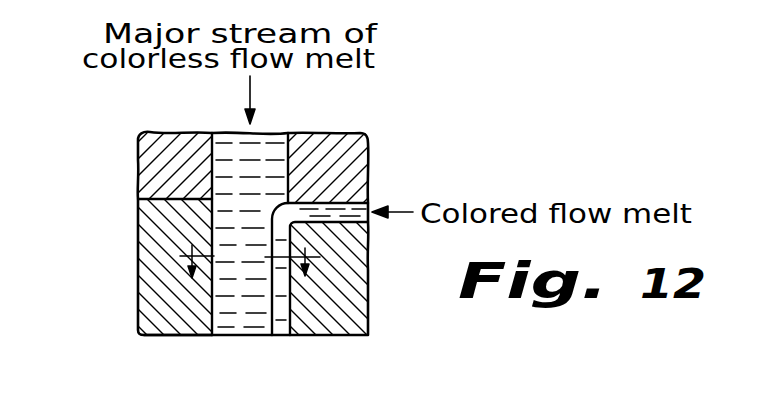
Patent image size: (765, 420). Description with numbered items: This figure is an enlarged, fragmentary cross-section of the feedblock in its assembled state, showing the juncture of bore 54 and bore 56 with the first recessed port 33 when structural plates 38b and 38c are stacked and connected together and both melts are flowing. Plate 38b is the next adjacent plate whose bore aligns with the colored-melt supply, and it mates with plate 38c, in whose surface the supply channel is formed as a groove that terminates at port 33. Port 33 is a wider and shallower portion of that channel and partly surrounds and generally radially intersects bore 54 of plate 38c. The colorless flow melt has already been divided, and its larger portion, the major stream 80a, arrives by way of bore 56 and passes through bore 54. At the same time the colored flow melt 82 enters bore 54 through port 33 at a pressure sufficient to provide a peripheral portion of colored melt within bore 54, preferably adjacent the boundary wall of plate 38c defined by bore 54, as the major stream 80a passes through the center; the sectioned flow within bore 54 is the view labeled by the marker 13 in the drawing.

The structural plate 38b is at (143, 160).
The structural plate 38c is at (145, 252).
The major stream 80a is at (233, 143).
The bore 56 is at (311, 142).
The colored flow melt 82 is at (366, 192).
The melt flow direction 13 is at (245, 269).
The first recessed port 33 is at (338, 241).
The bore 54 is at (212, 305).